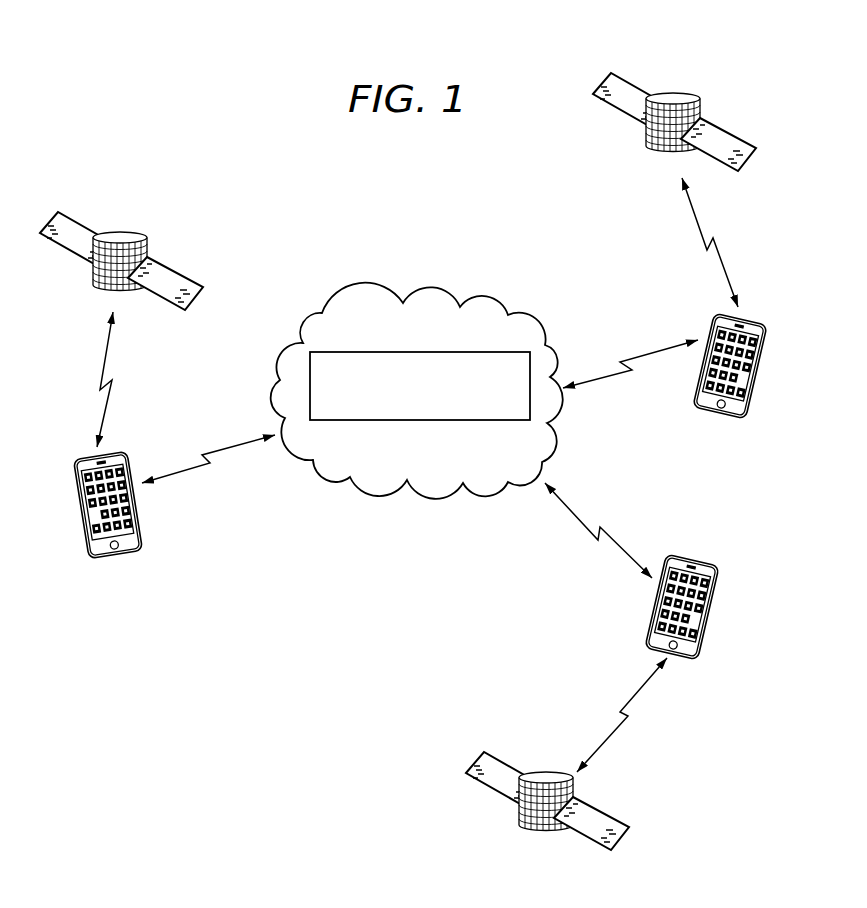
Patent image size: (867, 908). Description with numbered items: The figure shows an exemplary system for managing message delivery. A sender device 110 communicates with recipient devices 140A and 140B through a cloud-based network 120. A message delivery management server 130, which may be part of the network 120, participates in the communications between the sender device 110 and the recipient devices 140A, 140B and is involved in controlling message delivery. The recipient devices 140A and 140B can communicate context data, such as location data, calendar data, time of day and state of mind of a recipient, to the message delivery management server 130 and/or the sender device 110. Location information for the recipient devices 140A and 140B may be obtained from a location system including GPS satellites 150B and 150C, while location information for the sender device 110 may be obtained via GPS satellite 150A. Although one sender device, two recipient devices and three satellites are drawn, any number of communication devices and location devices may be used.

The sender device 110 is at (120, 559).
The cloud-based network 120 is at (420, 493).
The message delivery management server 130 is at (420, 352).
The recipient device 140A is at (715, 420).
The recipient device 140B is at (706, 622).
The GPS satellite 150A is at (127, 232).
The GPS satellite 150B is at (678, 94).
The GPS satellite 150C is at (543, 774).